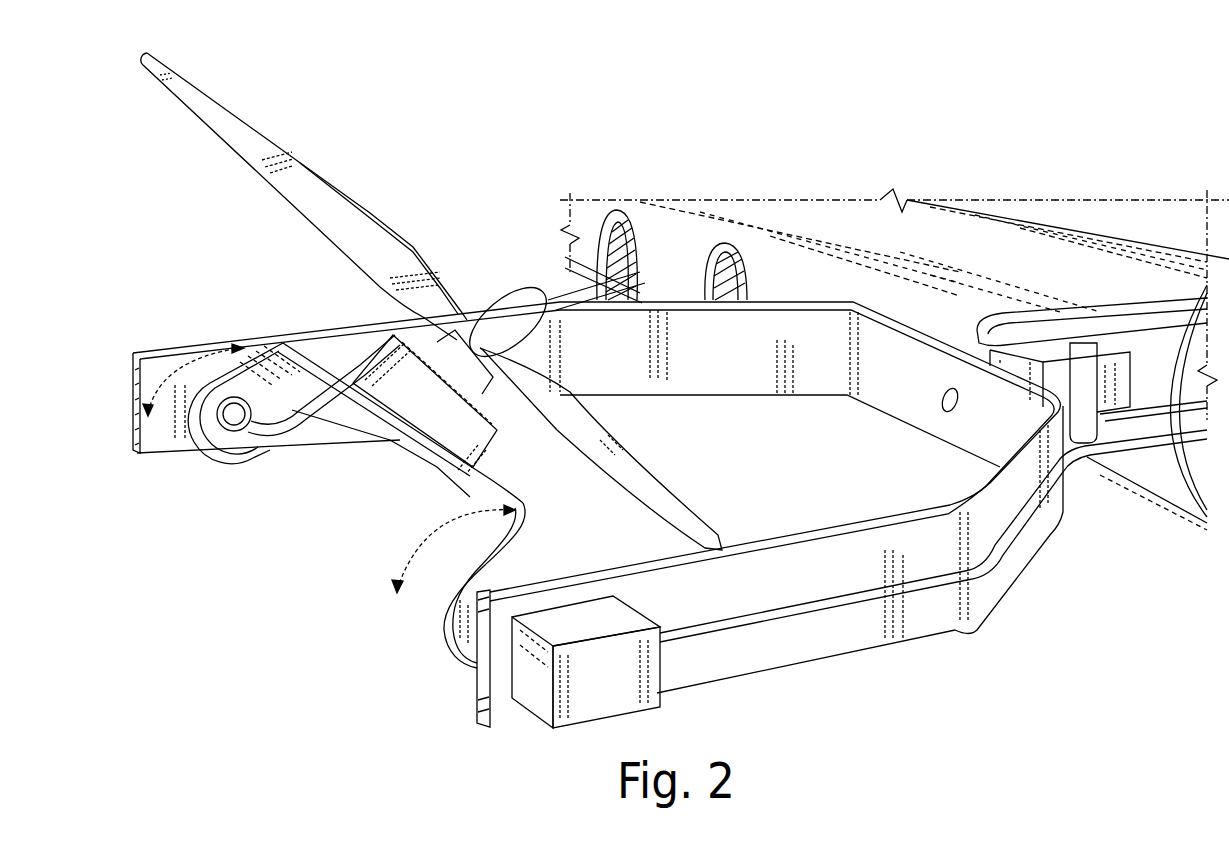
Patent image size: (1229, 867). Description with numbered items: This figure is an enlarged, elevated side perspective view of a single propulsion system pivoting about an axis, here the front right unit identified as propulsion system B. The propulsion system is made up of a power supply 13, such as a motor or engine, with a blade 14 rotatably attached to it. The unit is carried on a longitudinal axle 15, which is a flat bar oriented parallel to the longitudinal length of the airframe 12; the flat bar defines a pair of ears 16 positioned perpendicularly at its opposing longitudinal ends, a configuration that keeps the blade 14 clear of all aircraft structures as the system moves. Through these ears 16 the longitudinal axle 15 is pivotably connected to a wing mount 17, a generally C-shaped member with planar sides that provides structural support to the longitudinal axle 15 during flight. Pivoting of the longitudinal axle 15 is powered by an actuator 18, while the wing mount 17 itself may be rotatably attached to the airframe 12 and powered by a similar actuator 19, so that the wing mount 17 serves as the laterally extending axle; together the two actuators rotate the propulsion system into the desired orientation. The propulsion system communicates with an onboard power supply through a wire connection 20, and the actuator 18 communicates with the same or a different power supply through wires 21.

The airframe 12 is at (775, 200).
The power supply 13 is at (487, 450).
The blade 14 is at (643, 467).
The longitudinal axle 15 is at (393, 443).
The ears 16 is at (227, 453).
The wing mount 17 is at (947, 630).
The actuator 18 is at (660, 697).
The actuator 19 is at (1127, 378).
The wire connection 20 is at (270, 432).
The wires 21 is at (807, 603).
The propulsion system B is at (514, 284).